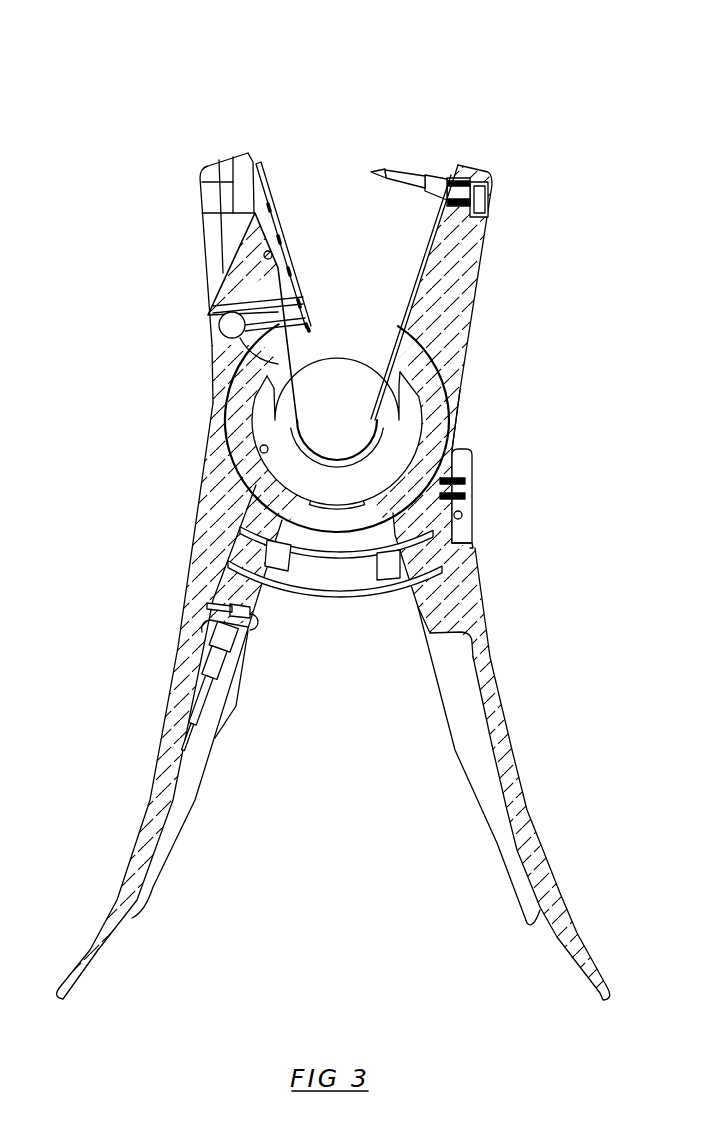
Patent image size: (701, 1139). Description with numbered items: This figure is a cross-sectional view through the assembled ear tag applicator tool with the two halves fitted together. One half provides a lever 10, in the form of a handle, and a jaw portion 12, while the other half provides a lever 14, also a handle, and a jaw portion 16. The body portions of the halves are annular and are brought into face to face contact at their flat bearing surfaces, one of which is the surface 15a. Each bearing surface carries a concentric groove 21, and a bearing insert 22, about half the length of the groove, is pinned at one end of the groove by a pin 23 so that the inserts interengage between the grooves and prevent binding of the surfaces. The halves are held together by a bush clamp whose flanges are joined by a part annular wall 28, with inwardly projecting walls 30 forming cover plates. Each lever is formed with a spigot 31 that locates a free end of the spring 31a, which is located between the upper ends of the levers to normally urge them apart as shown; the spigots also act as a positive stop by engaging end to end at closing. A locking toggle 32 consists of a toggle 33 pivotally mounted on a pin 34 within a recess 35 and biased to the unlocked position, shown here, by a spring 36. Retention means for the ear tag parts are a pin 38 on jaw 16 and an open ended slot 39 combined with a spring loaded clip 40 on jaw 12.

The lever 10 is at (550, 937).
The lever 14 is at (120, 928).
The jaw portion 12 is at (208, 263).
The jaw portion 16 is at (481, 248).
The flat surface 15a is at (237, 423).
The concentric groove 21 is at (220, 321).
The bearing insert 22 is at (262, 410).
The pin 23 is at (260, 449).
The part annular wall 28 is at (310, 453).
The inwardly projecting walls 30 is at (393, 357).
The spigot 31 is at (281, 563).
The spring 31a is at (337, 598).
The locking toggle 32 is at (473, 482).
The toggle 33 is at (473, 453).
The pin 34 is at (465, 525).
The recess 35 is at (455, 448).
The spring 36 is at (465, 500).
The pin 38 is at (403, 173).
The open ended slot 39 is at (237, 165).
The spring loaded clip 40 is at (271, 203).